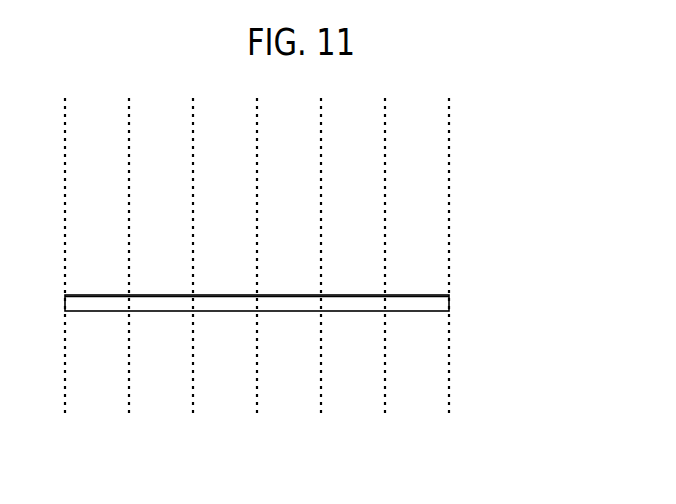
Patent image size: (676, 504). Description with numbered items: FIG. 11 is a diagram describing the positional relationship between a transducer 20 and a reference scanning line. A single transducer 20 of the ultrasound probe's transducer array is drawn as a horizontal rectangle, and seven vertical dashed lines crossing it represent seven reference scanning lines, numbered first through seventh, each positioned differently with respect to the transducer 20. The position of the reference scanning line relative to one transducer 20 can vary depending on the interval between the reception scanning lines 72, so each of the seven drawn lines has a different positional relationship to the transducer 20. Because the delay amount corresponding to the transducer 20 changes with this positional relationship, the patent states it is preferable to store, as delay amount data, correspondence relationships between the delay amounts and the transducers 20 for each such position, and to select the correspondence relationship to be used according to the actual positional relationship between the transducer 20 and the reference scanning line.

The transducer 20 is at (417, 294).
The reception scanning lines 72 is at (267, 281).